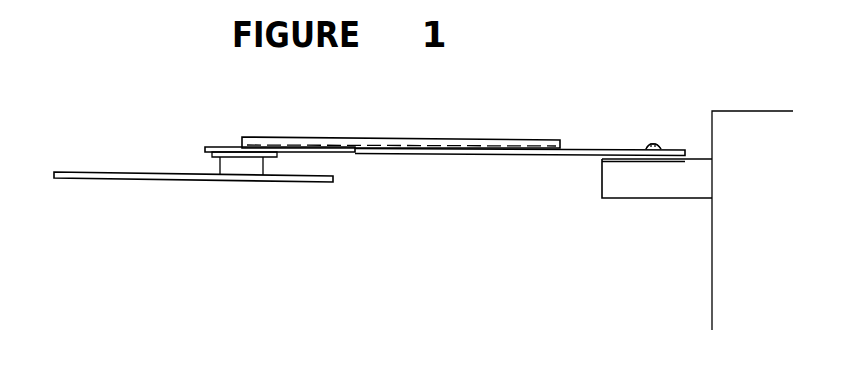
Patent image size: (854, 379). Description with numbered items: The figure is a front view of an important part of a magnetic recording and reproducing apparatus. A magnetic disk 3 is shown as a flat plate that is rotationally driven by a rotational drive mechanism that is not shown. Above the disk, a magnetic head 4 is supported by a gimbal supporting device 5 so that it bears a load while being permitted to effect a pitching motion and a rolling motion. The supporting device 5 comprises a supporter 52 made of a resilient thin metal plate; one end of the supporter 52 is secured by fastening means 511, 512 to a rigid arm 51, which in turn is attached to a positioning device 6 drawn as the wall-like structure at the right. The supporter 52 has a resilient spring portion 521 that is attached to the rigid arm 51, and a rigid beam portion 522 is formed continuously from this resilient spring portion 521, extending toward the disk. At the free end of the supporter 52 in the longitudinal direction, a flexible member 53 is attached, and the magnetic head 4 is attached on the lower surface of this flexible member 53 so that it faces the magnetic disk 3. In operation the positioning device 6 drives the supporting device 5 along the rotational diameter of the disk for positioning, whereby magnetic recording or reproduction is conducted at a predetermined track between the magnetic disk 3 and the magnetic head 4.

The magnetic disk 3 is at (113, 172).
The magnetic head 4 is at (247, 166).
The gimbal supporting device 5 is at (427, 252).
The positioning device 6 is at (750, 110).
The rigid arm 51 is at (627, 183).
The supporter 52 is at (463, 150).
The flexible member 53 is at (223, 145).
The fastening means 511 is at (643, 142).
The fastening means 512 is at (643, 142).
The resilient spring portion 521 is at (571, 156).
The rigid beam portion 522 is at (393, 153).